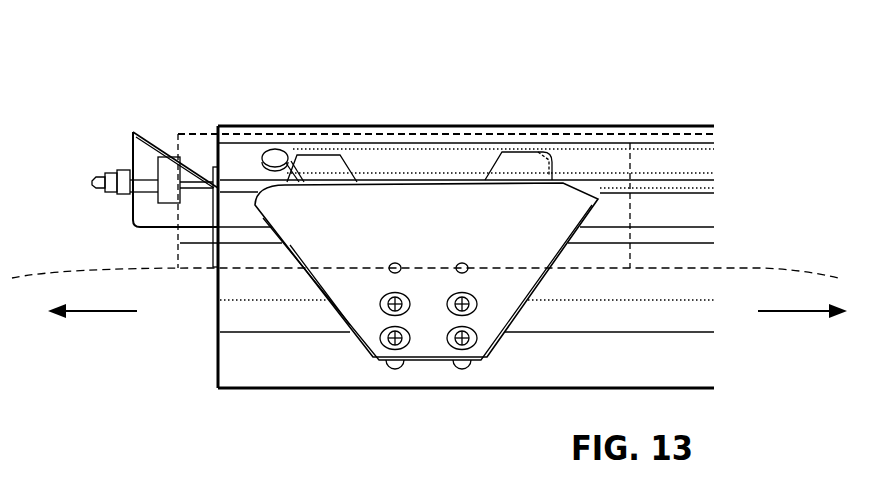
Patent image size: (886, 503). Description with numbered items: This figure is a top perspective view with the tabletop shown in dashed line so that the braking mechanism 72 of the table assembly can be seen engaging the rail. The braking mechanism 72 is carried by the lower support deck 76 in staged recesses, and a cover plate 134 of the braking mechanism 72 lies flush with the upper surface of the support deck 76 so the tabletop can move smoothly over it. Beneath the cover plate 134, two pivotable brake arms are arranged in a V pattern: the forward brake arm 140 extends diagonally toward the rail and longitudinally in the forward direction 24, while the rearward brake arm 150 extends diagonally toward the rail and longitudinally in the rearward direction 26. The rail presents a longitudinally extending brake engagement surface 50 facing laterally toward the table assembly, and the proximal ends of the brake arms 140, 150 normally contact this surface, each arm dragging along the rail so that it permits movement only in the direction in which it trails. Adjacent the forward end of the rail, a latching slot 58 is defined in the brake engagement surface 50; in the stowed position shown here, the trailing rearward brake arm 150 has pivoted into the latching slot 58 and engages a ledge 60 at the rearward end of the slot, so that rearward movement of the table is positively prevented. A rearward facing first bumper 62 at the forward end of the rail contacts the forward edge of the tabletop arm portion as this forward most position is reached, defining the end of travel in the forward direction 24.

The forward longitudinal direction 24 is at (107, 316).
The rearward longitudinal direction 26 is at (797, 316).
The brake engagement surface 50 is at (670, 157).
The latching slot 58 is at (373, 162).
The ledge 60 is at (541, 153).
The first bumper 62 is at (167, 160).
The braking mechanism 72 is at (320, 317).
The support deck 76 is at (763, 268).
The cover plate 134 is at (427, 212).
The forward brake arm 140 is at (318, 168).
The rearward brake arm 150 is at (508, 158).